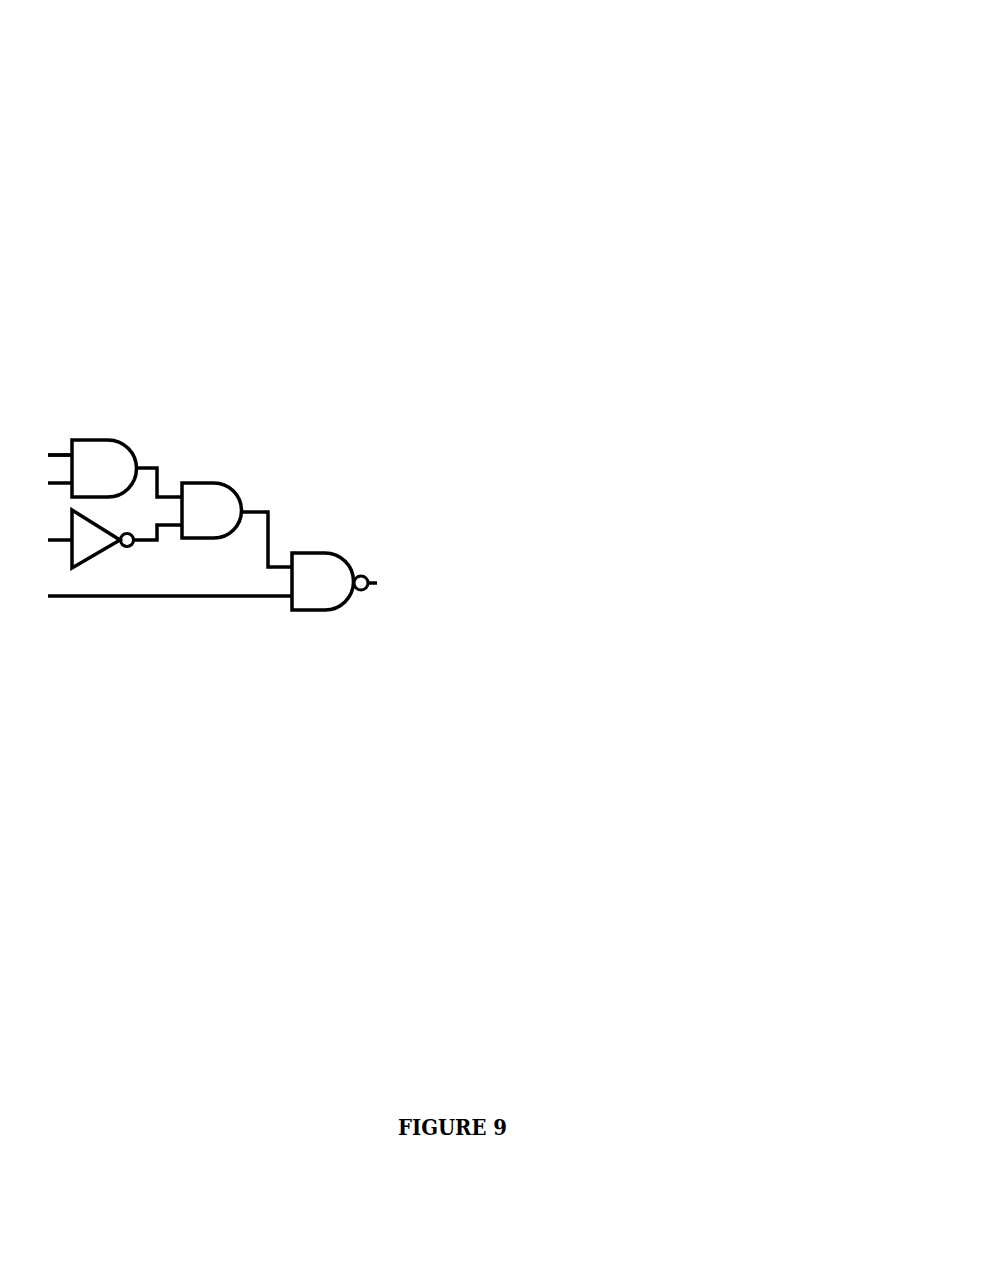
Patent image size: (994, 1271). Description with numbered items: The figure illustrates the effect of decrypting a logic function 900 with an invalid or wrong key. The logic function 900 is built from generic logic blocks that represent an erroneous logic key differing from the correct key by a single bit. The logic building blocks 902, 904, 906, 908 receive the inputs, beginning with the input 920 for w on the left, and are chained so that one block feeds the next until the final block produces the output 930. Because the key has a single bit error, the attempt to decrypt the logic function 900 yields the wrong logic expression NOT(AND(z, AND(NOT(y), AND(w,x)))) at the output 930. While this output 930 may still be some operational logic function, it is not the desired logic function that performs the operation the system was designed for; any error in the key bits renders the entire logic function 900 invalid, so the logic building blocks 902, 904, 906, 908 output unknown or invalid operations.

The logic function 900 is at (442, 319).
The input w 920 is at (38, 437).
The logic building block 904 is at (125, 440).
The logic building block 902 is at (225, 482).
The logic building block 906 is at (97, 555).
The logic building block 908 is at (340, 552).
The output 930 is at (373, 575).